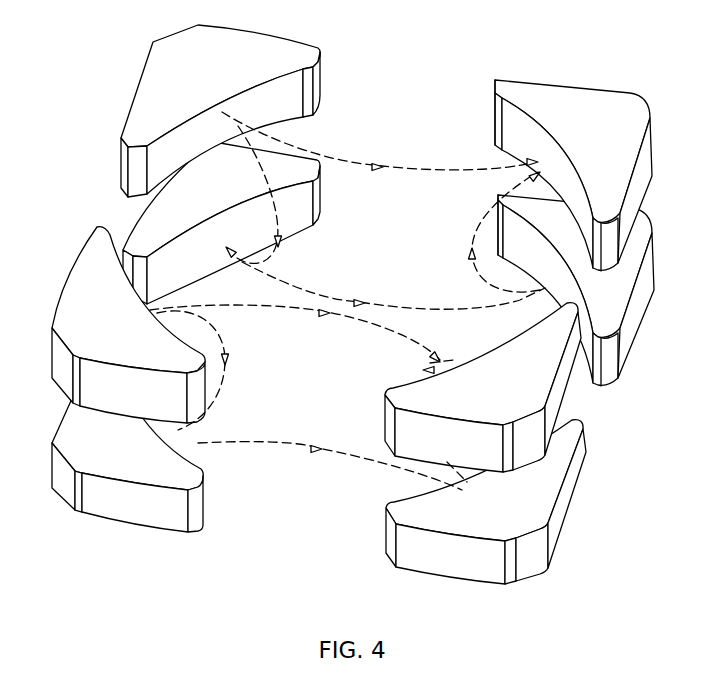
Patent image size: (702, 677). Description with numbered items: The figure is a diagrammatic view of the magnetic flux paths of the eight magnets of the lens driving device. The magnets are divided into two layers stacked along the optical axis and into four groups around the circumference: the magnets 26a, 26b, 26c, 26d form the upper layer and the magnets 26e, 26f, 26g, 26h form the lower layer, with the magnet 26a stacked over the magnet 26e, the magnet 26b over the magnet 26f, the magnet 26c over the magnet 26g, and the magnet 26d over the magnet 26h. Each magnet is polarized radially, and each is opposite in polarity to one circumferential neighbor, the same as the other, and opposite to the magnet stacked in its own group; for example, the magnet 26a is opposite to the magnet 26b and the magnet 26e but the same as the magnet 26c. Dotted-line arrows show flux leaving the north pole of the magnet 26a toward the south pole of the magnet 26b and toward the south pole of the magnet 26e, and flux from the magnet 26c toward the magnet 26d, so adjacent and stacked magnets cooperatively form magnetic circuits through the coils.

The magnet 26a is at (220, 111).
The magnet 26b is at (573, 175).
The magnet 26c is at (128, 325).
The magnet 26d is at (483, 387).
The magnet 26e is at (221, 222).
The magnet 26f is at (576, 290).
The magnet 26g is at (127, 437).
The magnet 26h is at (486, 502).